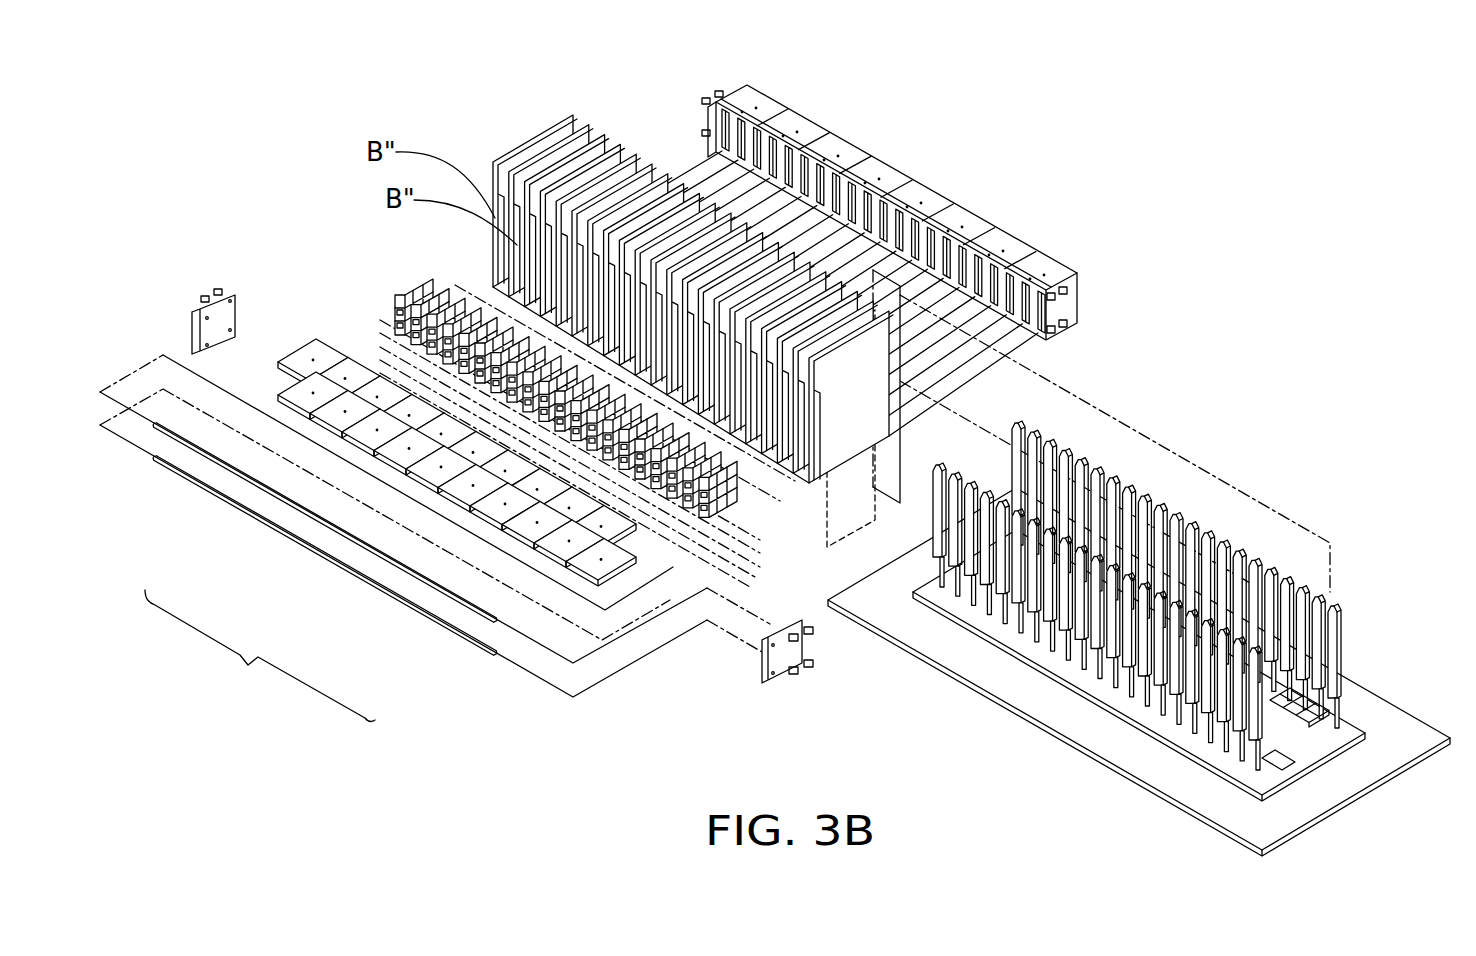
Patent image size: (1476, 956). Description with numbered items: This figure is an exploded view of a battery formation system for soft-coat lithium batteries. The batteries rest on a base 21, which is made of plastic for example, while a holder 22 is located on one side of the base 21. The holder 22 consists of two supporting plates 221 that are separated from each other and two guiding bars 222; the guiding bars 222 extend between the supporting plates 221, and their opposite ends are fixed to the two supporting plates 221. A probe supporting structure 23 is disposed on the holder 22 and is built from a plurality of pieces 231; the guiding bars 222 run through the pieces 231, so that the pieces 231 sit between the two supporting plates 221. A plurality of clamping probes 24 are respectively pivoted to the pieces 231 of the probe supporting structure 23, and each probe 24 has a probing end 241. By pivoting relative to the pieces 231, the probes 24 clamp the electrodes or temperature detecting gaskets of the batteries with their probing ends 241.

The base 21 is at (1388, 720).
The holder 22 is at (1095, 368).
The supporting plate 221 is at (192, 352).
The guiding bar 222 is at (260, 520).
The probe supporting structure 23 is at (838, 123).
The piece 231 is at (333, 355).
The probe 24 is at (711, 431).
The probing end 241 is at (695, 516).